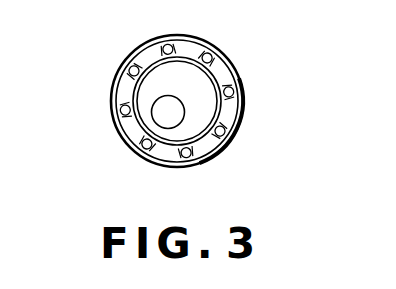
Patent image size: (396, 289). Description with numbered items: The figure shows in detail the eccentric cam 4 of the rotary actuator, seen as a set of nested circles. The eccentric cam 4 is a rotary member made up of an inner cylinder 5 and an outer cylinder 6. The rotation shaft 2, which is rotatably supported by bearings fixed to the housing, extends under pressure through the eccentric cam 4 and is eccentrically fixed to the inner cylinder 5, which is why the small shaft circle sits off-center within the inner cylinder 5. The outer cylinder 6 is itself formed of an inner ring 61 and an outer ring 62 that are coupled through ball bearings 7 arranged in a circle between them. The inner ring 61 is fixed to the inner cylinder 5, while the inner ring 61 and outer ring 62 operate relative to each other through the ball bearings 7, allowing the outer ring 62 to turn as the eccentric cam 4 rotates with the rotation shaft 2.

The rotation shaft 2 is at (158, 118).
The eccentric cam 4 is at (243, 80).
The inner cylinder 5 is at (168, 135).
The outer cylinder 6 is at (236, 123).
The inner ring 61 is at (140, 57).
The outer ring 62 is at (225, 62).
The ball bearings 7 is at (123, 105).